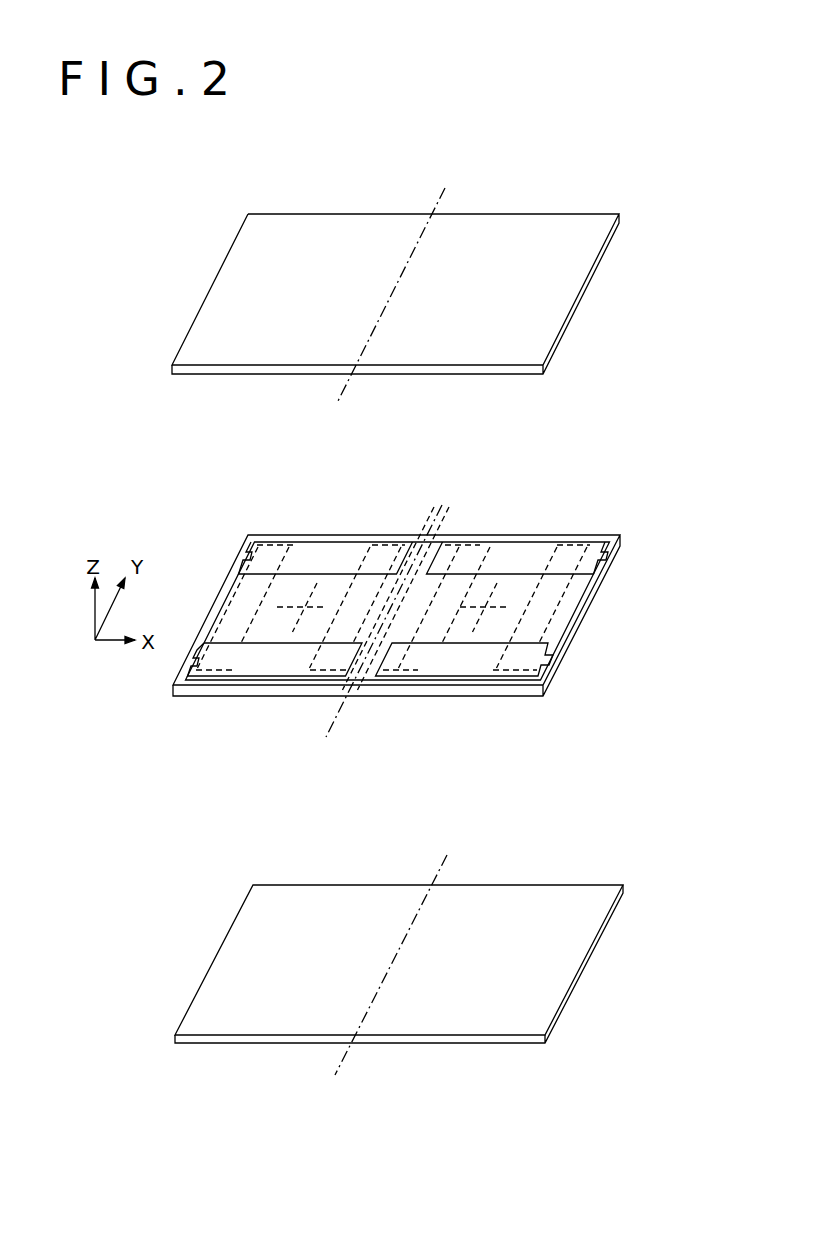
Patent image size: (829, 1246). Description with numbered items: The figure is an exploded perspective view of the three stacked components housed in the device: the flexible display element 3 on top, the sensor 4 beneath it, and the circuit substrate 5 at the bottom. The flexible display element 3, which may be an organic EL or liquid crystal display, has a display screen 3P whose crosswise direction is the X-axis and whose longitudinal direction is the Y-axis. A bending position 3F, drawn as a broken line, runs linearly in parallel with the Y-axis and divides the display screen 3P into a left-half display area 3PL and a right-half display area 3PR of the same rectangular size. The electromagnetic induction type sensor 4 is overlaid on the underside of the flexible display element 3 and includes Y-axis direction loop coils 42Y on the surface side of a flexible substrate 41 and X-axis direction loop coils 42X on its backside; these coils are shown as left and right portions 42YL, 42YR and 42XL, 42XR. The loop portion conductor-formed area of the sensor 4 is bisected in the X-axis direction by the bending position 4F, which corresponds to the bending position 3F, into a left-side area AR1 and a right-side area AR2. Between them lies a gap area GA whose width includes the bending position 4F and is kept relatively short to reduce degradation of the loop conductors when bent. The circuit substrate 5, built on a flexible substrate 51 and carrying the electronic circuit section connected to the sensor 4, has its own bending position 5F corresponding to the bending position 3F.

The flexible display element 3 is at (412, 238).
The display screen 3P is at (395, 223).
The left-half display area 3PL is at (328, 233).
The right-half display area 3PR is at (537, 233).
The bending position 3F is at (423, 233).
The sensor 4 is at (417, 609).
The flexible substrate 41 is at (610, 537).
The Y-axis direction loop coils 42Y is at (424, 483).
The left-side Y-axis direction loop coils 42YL is at (378, 538).
The right-side Y-axis direction loop coils 42YR is at (518, 510).
The X-axis direction loop coils 42X is at (371, 734).
The left-side X-axis direction loop coils 42XL is at (238, 653).
The right-side X-axis direction loop coils 42XR is at (503, 653).
The bending position of the sensor 4F is at (343, 708).
The gap area GA is at (414, 515).
The left-side area AR1 is at (298, 537).
The right-side area AR2 is at (572, 537).
The circuit substrate 5 is at (399, 957).
The flexible substrate 51 is at (248, 910).
The bending position of the circuit substrate 5F is at (345, 1058).